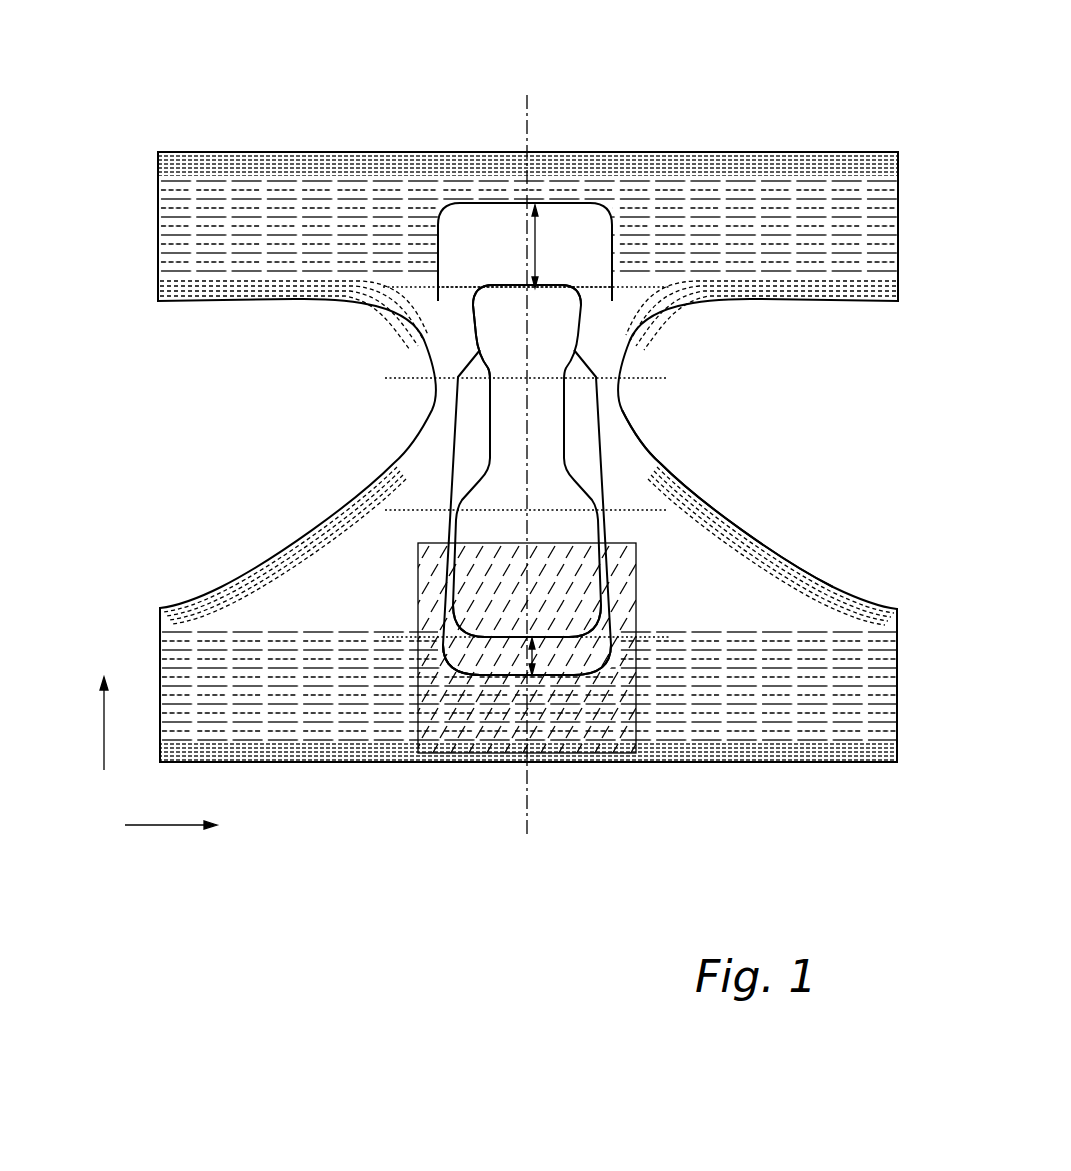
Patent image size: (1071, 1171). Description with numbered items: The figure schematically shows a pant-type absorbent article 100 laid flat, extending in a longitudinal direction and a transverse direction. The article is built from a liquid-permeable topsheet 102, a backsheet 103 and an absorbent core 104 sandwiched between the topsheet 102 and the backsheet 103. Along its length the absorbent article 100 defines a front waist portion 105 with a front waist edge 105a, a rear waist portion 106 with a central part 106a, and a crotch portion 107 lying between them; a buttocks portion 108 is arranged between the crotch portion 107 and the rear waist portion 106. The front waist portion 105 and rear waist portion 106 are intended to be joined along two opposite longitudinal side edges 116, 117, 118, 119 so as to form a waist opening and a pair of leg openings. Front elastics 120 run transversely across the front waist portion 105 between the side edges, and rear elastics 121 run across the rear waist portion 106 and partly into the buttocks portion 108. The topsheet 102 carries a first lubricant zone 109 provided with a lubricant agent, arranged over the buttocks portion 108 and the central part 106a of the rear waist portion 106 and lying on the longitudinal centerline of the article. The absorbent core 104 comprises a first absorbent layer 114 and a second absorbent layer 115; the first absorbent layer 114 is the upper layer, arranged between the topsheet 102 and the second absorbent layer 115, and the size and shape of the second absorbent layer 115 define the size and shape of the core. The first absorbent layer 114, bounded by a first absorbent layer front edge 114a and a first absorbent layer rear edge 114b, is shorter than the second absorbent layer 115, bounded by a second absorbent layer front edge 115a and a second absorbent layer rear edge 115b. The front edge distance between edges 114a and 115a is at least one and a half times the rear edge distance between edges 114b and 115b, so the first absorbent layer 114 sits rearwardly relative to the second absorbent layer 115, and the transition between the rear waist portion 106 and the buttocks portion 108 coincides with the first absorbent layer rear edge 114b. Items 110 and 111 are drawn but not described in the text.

The absorbent article 100 is at (790, 95).
The liquid-permeable topsheet 102 is at (640, 430).
The backsheet 103 is at (627, 463).
The absorbent core 104 is at (593, 270).
The front waist portion 105 is at (632, 220).
The front waist edge 105a is at (807, 152).
The rear waist portion 106 is at (727, 697).
The central part of the rear waist portion 106a is at (570, 757).
The crotch portion 107 is at (470, 437).
The buttocks portion 108 is at (640, 583).
The first lubricant zone 109 is at (477, 688).
The leg opening edge 110 is at (680, 533).
The absorbent assembly 111 is at (508, 345).
The first absorbent layer 114 is at (553, 325).
The first absorbent layer front edge 114a is at (497, 287).
The first absorbent layer rear edge 114b is at (503, 670).
The second absorbent layer 115 is at (590, 228).
The second absorbent layer front edge 115a is at (517, 203).
The second absorbent layer rear edge 115b is at (580, 673).
The longitudinal side edge 116 is at (900, 217).
The longitudinal side edge 117 is at (158, 235).
The longitudinal side edge 118 is at (897, 693).
The longitudinal side edge 119 is at (158, 660).
The front elastics 120 is at (350, 210).
The rear elastics 121 is at (780, 702).